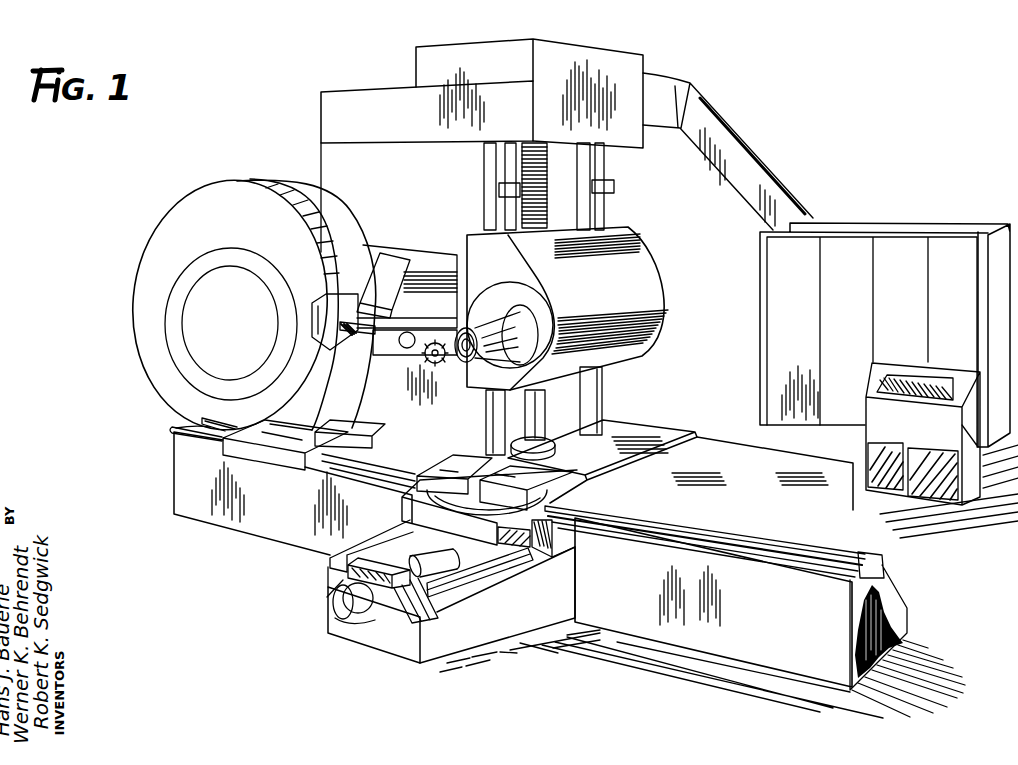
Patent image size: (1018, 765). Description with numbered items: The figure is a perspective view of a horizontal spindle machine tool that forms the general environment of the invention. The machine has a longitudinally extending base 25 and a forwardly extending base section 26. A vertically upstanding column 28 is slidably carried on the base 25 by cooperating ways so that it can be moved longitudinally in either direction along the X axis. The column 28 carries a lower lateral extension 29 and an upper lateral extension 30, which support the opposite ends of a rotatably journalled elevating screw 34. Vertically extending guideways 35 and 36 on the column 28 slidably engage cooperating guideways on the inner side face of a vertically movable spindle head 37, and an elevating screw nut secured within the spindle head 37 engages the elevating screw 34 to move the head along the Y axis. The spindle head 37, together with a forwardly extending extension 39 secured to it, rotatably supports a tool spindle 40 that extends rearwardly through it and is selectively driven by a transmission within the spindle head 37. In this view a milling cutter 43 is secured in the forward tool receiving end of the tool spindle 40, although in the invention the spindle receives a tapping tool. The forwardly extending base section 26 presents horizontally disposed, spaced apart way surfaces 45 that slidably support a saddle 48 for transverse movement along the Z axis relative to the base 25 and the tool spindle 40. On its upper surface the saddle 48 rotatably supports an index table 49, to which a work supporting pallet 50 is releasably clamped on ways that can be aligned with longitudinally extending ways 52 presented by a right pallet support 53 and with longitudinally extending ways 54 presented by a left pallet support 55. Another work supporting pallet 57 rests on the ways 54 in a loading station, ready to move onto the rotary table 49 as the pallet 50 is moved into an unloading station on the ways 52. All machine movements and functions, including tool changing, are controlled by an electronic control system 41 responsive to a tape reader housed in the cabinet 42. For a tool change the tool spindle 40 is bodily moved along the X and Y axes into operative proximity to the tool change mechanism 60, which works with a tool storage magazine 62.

The longitudinally extending base 25 is at (803, 536).
The forwardly extending base section 26 is at (484, 633).
The vertically upstanding column 28 is at (333, 156).
The lower lateral extension 29 is at (643, 431).
The upper lateral extension 30 is at (605, 56).
The elevating screw 34 is at (562, 211).
The vertically extending guideway 35 is at (500, 153).
The vertically extending guideway 36 is at (596, 166).
The spindle head 37 is at (648, 281).
The forwardly extending extension 39 is at (517, 323).
The tool spindle 40 is at (466, 362).
The electronic control system 41 is at (845, 252).
The cabinet 42 is at (870, 430).
The milling cutter 43 is at (426, 362).
The way surfaces 45 is at (347, 553).
The saddle 48 is at (545, 543).
The index table 49 is at (405, 495).
The work supporting pallet 50 is at (551, 467).
The longitudinally extending ways 52 is at (880, 556).
The right pallet support 53 is at (588, 603).
The longitudinally extending ways 54 is at (193, 428).
The left pallet support 55 is at (278, 533).
The work supporting pallet 57 is at (228, 448).
The tool change mechanism 60 is at (436, 240).
The tool storage magazine 62 is at (340, 220).